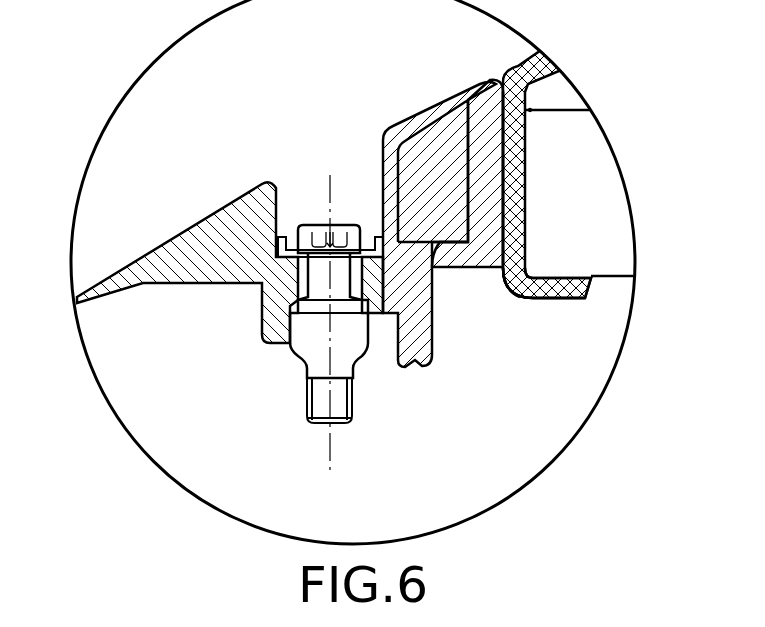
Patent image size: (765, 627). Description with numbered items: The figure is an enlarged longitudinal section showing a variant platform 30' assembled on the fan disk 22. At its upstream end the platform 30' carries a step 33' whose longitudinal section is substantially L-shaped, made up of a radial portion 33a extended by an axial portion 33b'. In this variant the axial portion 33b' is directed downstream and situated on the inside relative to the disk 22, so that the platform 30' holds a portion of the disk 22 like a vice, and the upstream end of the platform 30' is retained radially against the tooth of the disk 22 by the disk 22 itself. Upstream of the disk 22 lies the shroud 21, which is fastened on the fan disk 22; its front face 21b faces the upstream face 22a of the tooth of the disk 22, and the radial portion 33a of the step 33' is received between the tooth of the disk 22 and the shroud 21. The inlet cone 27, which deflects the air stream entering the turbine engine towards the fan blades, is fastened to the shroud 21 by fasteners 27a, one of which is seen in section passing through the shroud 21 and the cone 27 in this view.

The platform 30' is at (358, 250).
The upstream shroud 21 is at (478, 177).
The front face of the shroud 21b is at (500, 92).
The fan disk 22 is at (608, 265).
The upstream face of the tooth of the disk 22a is at (527, 210).
The inlet cone 27 is at (217, 222).
The fasteners 27a is at (318, 357).
The radial portion of the step 33a is at (515, 170).
The axial portion of the step 33b' is at (544, 307).
The step 33' is at (490, 329).